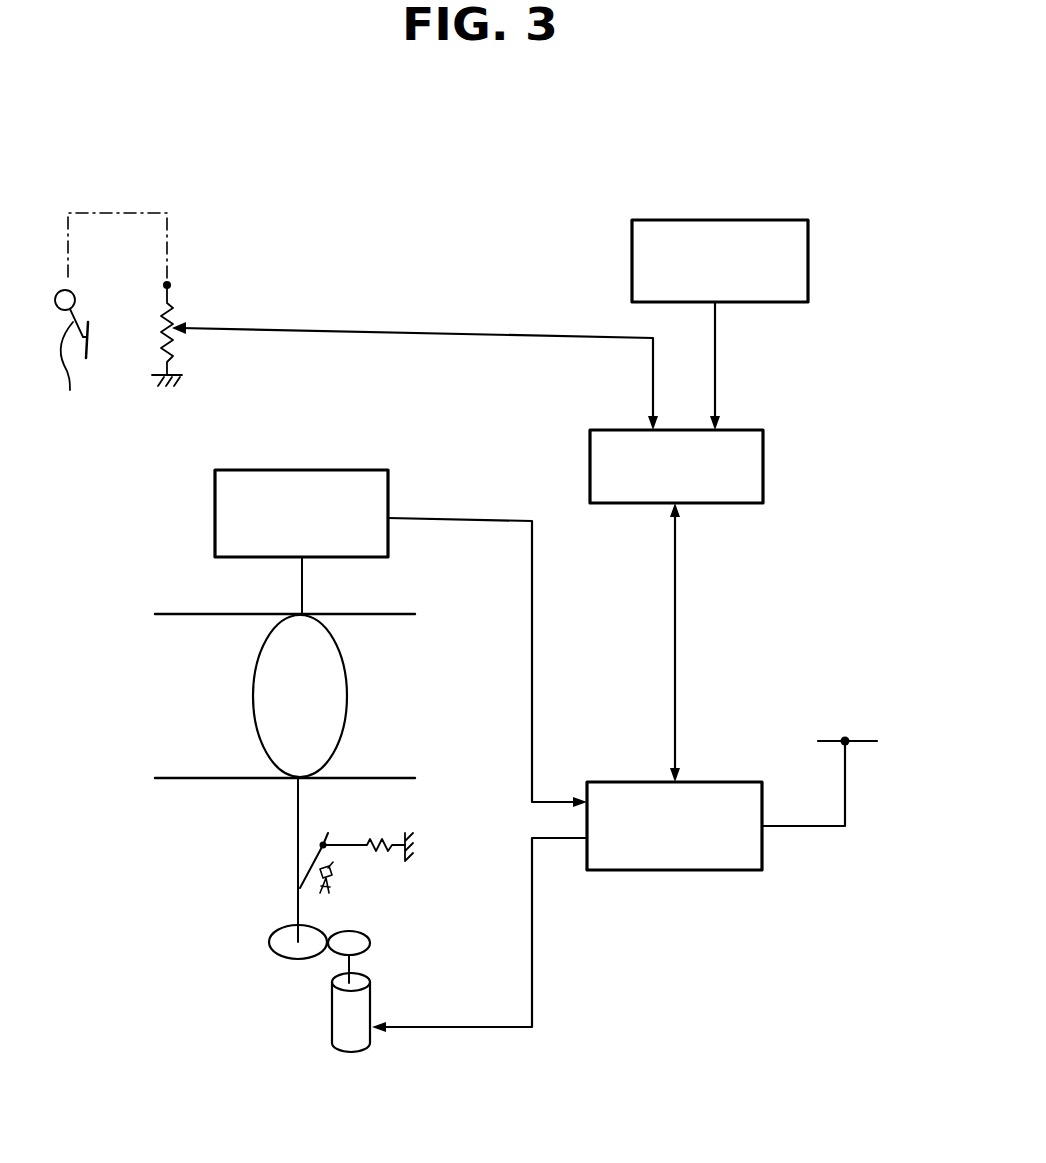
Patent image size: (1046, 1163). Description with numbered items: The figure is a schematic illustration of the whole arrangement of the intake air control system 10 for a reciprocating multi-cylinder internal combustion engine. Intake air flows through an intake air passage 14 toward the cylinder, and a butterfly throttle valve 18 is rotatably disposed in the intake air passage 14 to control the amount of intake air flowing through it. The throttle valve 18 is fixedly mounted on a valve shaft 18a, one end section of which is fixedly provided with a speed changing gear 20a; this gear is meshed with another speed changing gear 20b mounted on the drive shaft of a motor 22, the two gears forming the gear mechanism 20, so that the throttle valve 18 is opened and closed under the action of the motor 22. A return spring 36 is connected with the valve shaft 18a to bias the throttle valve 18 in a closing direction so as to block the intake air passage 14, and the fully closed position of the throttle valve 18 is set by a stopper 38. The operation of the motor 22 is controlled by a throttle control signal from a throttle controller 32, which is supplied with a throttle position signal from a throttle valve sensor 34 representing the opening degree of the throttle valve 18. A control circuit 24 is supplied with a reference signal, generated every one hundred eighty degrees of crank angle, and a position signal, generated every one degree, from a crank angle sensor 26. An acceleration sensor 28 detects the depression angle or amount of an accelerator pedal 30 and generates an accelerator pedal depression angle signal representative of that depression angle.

The intake air control system 10 is at (519, 260).
The intake air passage 14 is at (207, 775).
The throttle valve 18 is at (268, 658).
The valve shaft 18a is at (305, 587).
The speed changing gear mechanism 20 is at (265, 905).
The speed changing gear 20a is at (278, 928).
The speed changing gear 20b is at (337, 948).
The motor 22 is at (342, 1030).
The control circuit 24 is at (737, 430).
The crank angle sensor 26 is at (728, 220).
The acceleration sensor 28 is at (168, 310).
The accelerator pedal 30 is at (107, 323).
The throttle controller 32 is at (715, 782).
The throttle valve sensor 34 is at (355, 470).
The return spring 36 is at (368, 843).
The stopper 38 is at (337, 882).